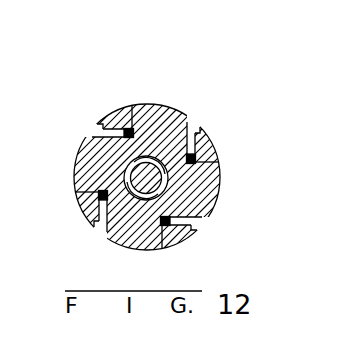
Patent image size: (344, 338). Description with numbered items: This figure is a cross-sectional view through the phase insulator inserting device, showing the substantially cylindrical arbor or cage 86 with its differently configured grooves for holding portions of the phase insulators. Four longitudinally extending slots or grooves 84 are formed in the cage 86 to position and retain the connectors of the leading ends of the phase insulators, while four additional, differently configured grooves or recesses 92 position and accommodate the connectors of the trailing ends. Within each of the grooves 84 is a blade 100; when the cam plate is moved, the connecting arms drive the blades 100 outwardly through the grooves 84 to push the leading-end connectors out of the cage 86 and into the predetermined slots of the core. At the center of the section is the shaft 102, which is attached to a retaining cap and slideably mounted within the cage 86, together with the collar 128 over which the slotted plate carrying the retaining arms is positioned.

The longitudinally extending slots or grooves 84 is at (120, 125).
The arbor or cage 86 is at (156, 105).
The differently configured grooves or recesses 92 is at (100, 123).
The blades 100 is at (128, 130).
The shaft 102 is at (163, 197).
The collar 128 is at (133, 167).